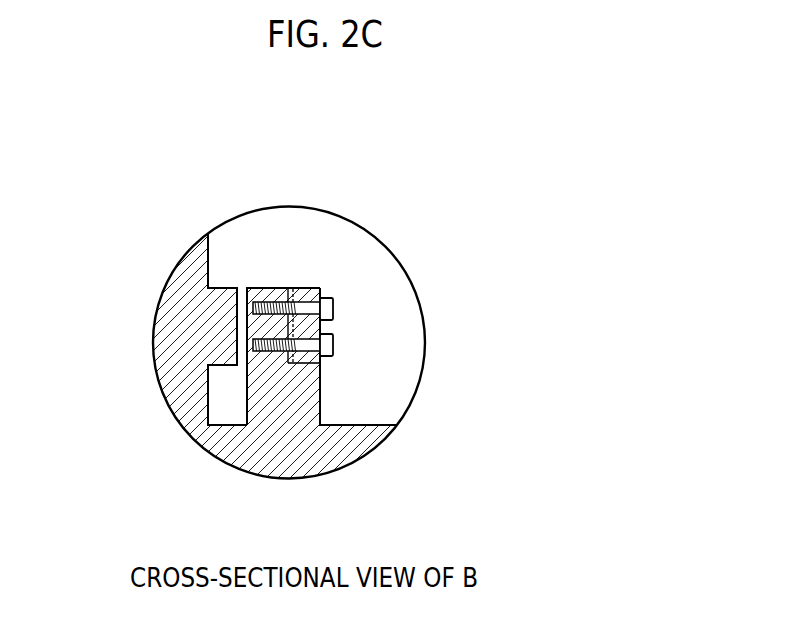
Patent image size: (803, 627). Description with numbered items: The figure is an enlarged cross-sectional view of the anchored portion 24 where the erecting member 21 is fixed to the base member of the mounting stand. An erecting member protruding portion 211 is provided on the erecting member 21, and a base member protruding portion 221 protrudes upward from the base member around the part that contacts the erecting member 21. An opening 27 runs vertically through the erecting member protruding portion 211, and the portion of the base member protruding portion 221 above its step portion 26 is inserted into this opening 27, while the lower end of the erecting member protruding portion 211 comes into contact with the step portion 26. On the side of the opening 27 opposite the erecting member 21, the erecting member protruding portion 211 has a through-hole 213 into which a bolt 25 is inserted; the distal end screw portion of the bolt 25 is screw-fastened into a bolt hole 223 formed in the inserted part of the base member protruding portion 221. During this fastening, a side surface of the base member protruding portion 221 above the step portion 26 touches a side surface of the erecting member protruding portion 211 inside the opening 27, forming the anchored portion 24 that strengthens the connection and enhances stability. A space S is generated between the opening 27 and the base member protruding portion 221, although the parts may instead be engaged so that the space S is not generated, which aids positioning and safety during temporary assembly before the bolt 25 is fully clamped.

The erecting member 21 is at (187, 332).
The erecting member protruding portion 211 is at (299, 290).
The through-hole 213 is at (333, 300).
The base member protruding portion 221 is at (320, 396).
The bolt hole 223 is at (252, 290).
The anchored portion 24 is at (268, 290).
The bolt 25 is at (333, 347).
The step portion 26 is at (320, 360).
The opening 27 is at (237, 350).
The space S is at (208, 277).